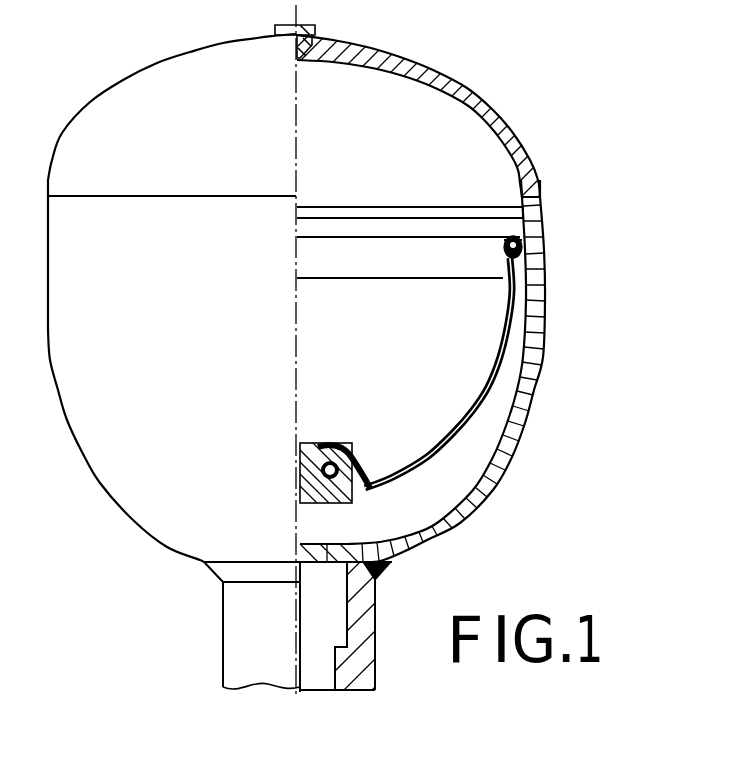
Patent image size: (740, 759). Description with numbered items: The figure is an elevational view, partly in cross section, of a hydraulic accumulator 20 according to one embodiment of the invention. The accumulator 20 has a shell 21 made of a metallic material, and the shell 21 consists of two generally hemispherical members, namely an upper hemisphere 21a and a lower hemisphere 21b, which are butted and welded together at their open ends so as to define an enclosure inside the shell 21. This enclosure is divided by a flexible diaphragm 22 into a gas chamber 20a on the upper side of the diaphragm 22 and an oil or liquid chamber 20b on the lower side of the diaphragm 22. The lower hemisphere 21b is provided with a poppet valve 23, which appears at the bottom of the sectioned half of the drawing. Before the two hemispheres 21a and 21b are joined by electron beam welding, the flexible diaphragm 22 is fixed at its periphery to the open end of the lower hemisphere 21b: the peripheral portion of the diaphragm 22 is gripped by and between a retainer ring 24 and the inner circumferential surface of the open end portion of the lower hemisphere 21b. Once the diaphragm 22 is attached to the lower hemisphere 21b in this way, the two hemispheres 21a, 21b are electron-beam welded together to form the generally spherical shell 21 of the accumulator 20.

The hydraulic accumulator 20 is at (511, 72).
The gas chamber 20a is at (388, 86).
The oil or liquid chamber 20b is at (460, 470).
The shell 21 is at (605, 222).
The upper hemisphere 21a is at (530, 174).
The lower hemisphere 21b is at (535, 252).
The flexible diaphragm 22 is at (505, 390).
The poppet valve 23 is at (302, 487).
The retainer ring 24 is at (503, 253).